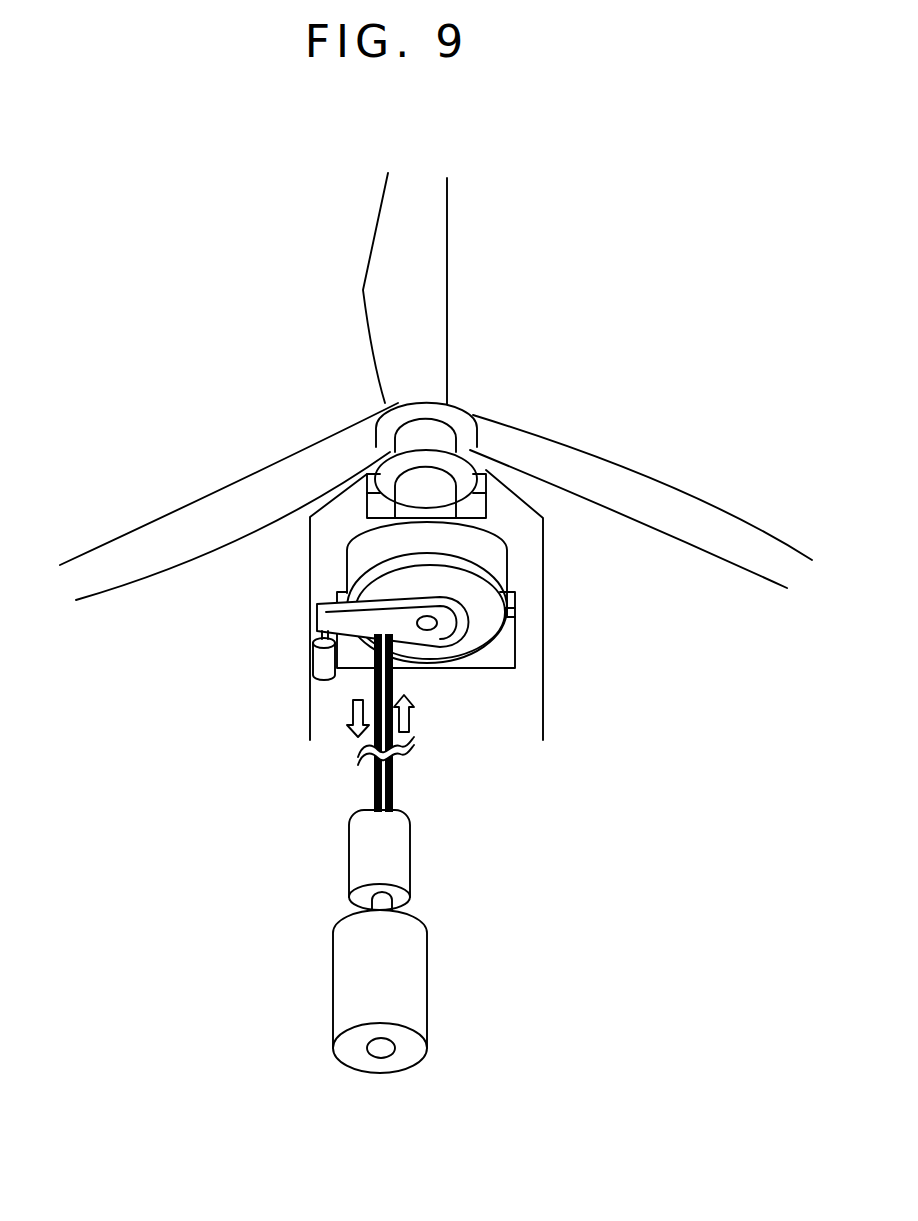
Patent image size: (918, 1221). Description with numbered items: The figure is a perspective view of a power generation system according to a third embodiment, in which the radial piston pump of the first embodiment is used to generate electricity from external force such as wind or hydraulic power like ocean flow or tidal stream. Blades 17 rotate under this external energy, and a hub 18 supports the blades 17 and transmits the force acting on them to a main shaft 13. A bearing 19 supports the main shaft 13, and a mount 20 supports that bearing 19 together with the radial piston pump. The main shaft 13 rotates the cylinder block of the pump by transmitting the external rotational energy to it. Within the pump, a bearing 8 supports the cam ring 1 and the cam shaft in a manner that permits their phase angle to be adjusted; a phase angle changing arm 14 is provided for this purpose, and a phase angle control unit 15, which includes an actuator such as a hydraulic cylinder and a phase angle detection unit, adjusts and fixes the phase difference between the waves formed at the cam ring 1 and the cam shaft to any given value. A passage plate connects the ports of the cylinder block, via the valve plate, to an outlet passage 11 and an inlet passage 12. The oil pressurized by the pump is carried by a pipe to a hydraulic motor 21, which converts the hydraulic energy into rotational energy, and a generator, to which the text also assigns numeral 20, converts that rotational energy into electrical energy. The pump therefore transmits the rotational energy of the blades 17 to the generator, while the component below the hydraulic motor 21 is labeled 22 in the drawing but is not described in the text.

The cam ring 1 is at (498, 565).
The bearing 8 is at (484, 607).
The outlet passage 11 is at (373, 682).
The inlet passage 12 is at (390, 683).
The main shaft 13 is at (440, 506).
The phase angle changing arm 14 is at (328, 623).
The phase angle control unit 15 is at (325, 658).
The blades 17 is at (663, 478).
The hub 18 is at (457, 405).
The bearing 19 is at (388, 452).
The mount 20 is at (515, 687).
The hydraulic motor 21 is at (394, 853).
The weight 22 is at (394, 968).